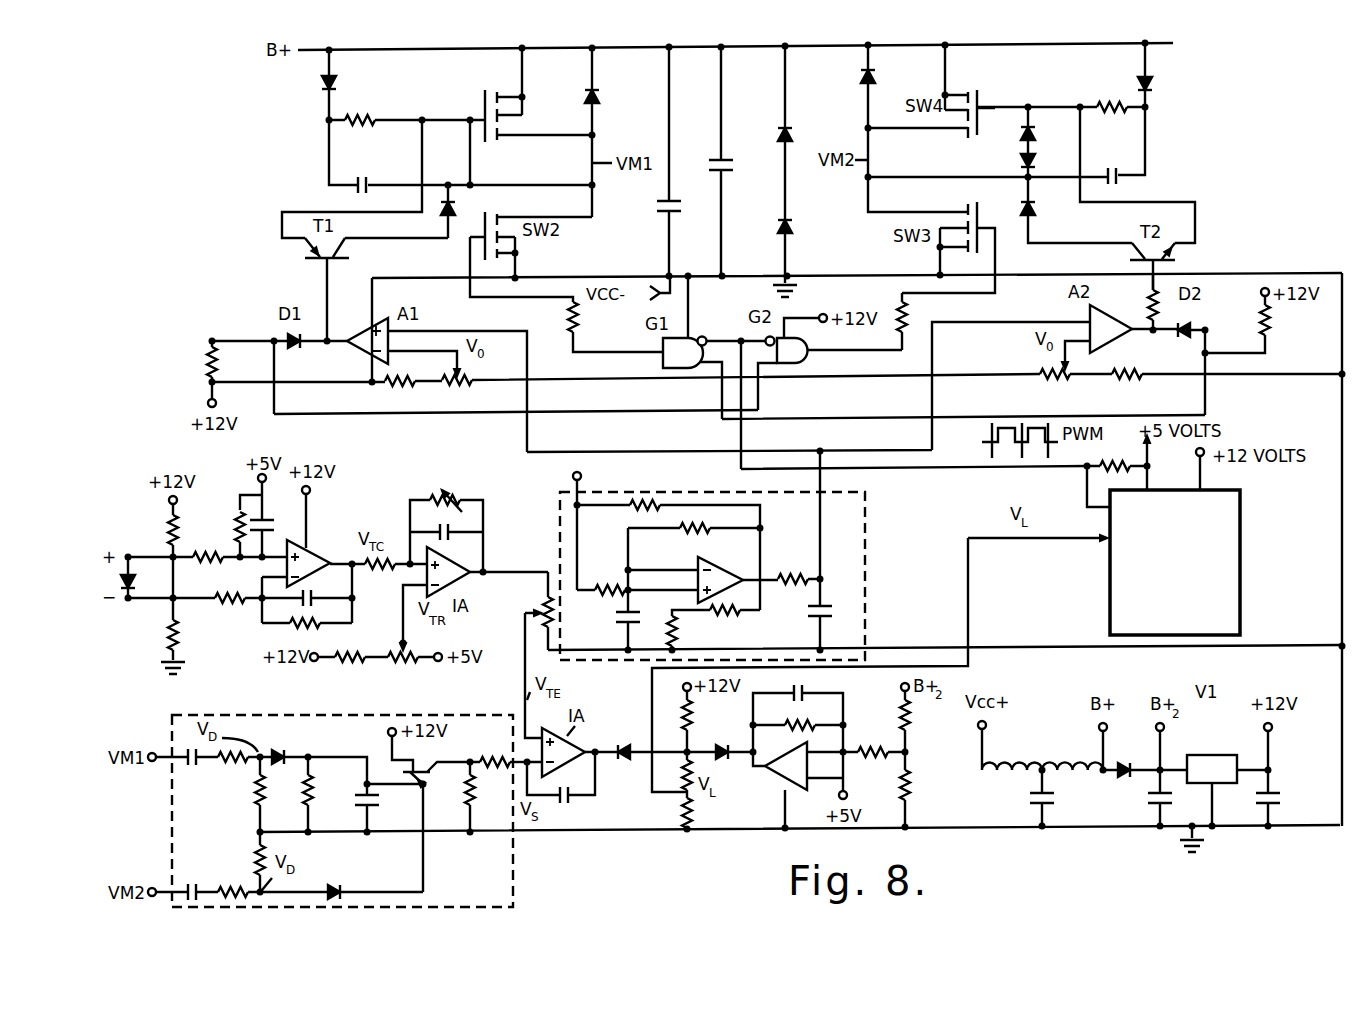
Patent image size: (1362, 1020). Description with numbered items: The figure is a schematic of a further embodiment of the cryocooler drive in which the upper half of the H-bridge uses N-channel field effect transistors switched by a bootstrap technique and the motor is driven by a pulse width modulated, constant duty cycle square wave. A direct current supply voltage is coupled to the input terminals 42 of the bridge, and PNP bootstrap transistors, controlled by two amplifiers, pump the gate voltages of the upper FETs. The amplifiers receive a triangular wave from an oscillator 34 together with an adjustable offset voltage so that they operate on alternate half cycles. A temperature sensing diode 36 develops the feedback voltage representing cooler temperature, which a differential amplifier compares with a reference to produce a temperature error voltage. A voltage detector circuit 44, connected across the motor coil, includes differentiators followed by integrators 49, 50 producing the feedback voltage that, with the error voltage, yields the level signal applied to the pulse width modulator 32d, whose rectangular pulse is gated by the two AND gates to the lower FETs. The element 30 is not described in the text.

The input terminals 42 is at (732, 161).
The oscillator 34 is at (862, 559).
The temperature sensing diode 36 is at (146, 578).
The voltage detector circuit 44 is at (349, 811).
The integrator 49 is at (308, 753).
The integrator 50 is at (422, 780).
The resistor 30 is at (504, 757).
The pulse width modulator 32d is at (1151, 562).